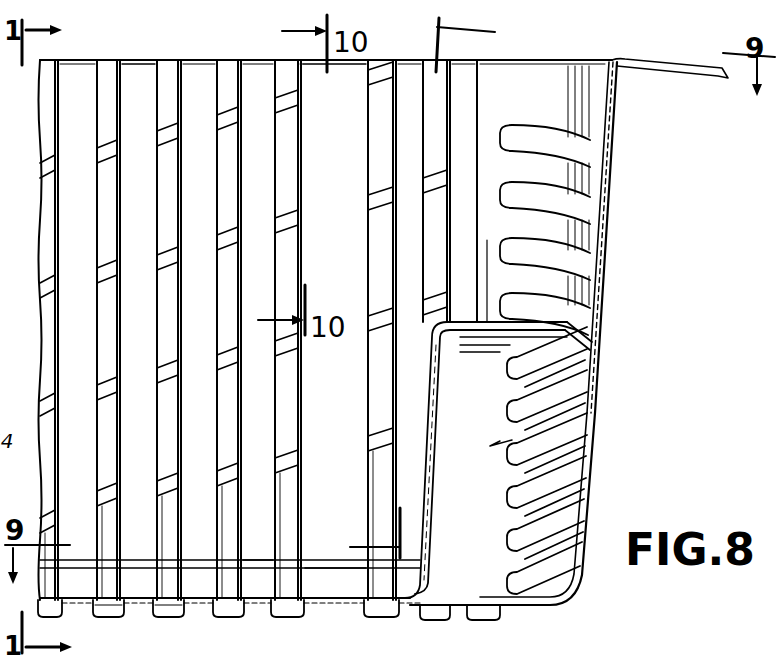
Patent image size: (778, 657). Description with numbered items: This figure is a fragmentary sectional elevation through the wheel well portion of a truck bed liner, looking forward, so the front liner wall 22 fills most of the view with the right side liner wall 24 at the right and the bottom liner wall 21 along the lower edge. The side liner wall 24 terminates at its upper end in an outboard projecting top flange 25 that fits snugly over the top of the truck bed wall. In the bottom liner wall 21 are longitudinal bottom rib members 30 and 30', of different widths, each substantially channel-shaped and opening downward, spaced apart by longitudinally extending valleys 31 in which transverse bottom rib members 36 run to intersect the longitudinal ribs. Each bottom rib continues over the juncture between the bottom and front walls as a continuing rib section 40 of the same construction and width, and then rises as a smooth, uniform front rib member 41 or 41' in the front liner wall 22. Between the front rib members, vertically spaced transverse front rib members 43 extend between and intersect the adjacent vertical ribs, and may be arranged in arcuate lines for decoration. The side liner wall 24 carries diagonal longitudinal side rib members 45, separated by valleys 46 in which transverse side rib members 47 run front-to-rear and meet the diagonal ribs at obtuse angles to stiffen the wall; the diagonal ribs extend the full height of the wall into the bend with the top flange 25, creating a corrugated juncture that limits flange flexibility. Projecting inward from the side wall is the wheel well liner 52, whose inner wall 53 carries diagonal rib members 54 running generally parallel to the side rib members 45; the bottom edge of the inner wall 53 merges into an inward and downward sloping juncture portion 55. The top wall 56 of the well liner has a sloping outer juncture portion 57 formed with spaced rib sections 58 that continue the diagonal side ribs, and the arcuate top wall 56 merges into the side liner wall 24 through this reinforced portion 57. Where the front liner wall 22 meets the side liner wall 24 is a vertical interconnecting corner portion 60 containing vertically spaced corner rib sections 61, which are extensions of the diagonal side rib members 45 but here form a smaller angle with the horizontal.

The bottom liner wall 21 is at (372, 617).
The front liner wall 22 is at (256, 76).
The right side liner wall 24 is at (624, 264).
The top flange 25 is at (690, 65).
The longitudinal bottom rib member 30 is at (230, 549).
The longitudinal bottom rib member 30' is at (335, 556).
The valley 31 is at (292, 608).
The transverse bottom rib member 36 is at (170, 617).
The continuing rib section 40 is at (265, 560).
The front rib member 41 is at (185, 122).
The front rib member 41' is at (334, 122).
The transverse front rib member 43 is at (165, 135).
The diagonal longitudinal side rib member 45 is at (612, 143).
The valley 46 is at (608, 125).
The transverse side rib member 47 is at (607, 230).
The wheel well liner 52 is at (560, 420).
The inner wall of well liner 53 is at (433, 460).
The diagonal rib member 54 is at (425, 437).
The juncture portion 55 is at (430, 605).
The top wall of well liner 56 is at (488, 322).
The sloping outer juncture portion 57 is at (582, 326).
The rib section 58 is at (577, 313).
The vertical interconnecting corner portion 60 is at (578, 50).
The corner rib section 61 is at (600, 150).